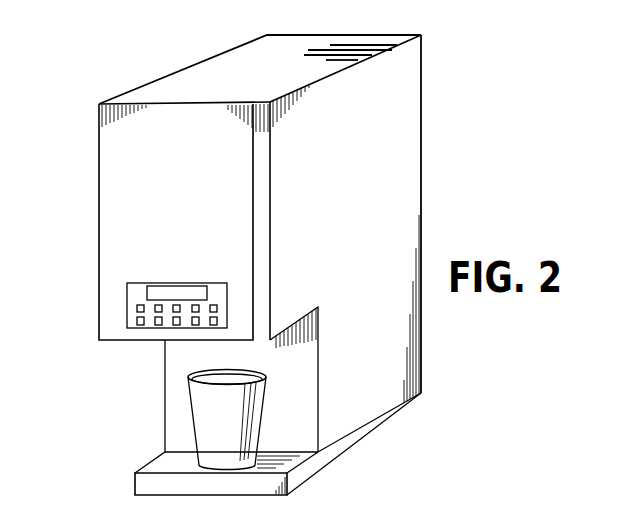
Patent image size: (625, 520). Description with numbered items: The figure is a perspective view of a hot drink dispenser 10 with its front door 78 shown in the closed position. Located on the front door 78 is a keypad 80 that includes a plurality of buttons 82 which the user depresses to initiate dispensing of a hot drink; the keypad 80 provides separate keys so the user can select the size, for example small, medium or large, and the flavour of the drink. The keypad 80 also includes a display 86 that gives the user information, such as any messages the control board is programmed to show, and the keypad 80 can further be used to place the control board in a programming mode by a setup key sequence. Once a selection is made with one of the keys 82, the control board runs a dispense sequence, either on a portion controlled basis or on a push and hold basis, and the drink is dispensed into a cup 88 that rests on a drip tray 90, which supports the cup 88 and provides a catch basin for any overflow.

The hot drink dispenser 10 is at (403, 123).
The front door 78 is at (122, 180).
The keypad 80 is at (128, 313).
The buttons 82 is at (140, 302).
The display 86 is at (179, 291).
The cup 88 is at (208, 423).
The drip tray 90 is at (292, 455).